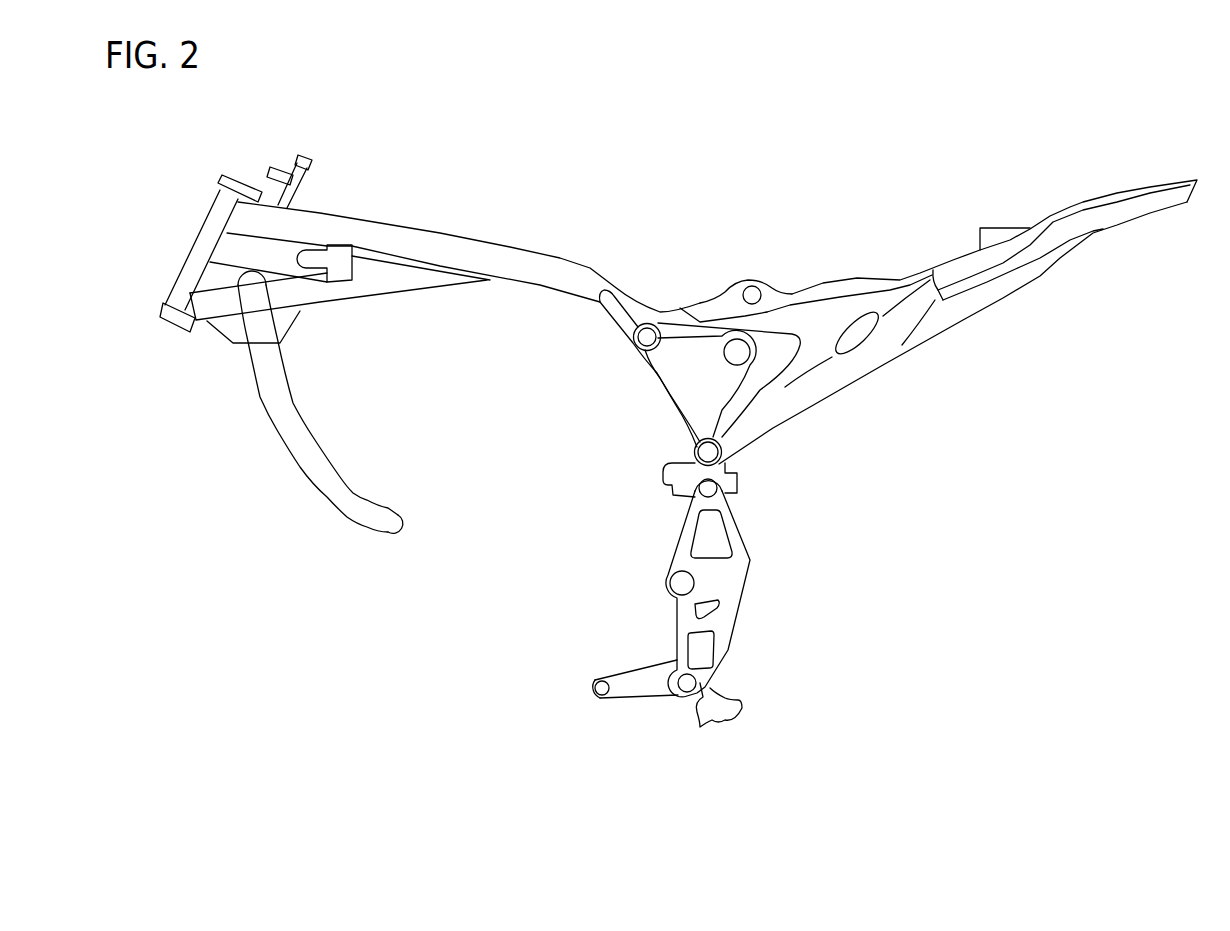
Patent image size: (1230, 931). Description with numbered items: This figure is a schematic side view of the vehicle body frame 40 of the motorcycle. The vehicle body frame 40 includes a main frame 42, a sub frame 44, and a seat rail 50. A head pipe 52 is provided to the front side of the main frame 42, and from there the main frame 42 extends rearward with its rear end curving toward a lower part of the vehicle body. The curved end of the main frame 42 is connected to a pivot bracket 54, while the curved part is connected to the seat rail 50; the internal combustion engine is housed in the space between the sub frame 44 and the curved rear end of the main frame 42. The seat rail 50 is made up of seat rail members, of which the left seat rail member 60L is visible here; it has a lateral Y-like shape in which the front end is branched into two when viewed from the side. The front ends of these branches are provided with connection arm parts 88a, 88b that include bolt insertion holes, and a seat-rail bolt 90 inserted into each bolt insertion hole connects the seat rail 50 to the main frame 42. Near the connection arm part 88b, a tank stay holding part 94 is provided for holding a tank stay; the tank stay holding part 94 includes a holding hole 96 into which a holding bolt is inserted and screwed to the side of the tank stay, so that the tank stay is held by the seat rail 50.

The vehicle body frame 40 is at (751, 201).
The main frame 42 is at (602, 272).
The sub frame 44 is at (313, 410).
The seat rail 50 is at (830, 280).
The head pipe 52 is at (210, 248).
The pivot bracket 54 is at (741, 530).
The left seat rail member 60L is at (933, 340).
The connection arm part 88a is at (760, 422).
The connection arm part 88b is at (658, 377).
The seat-rail bolt 90 is at (634, 345).
The tank stay holding part 94 is at (735, 289).
The holding hole 96 is at (756, 284).